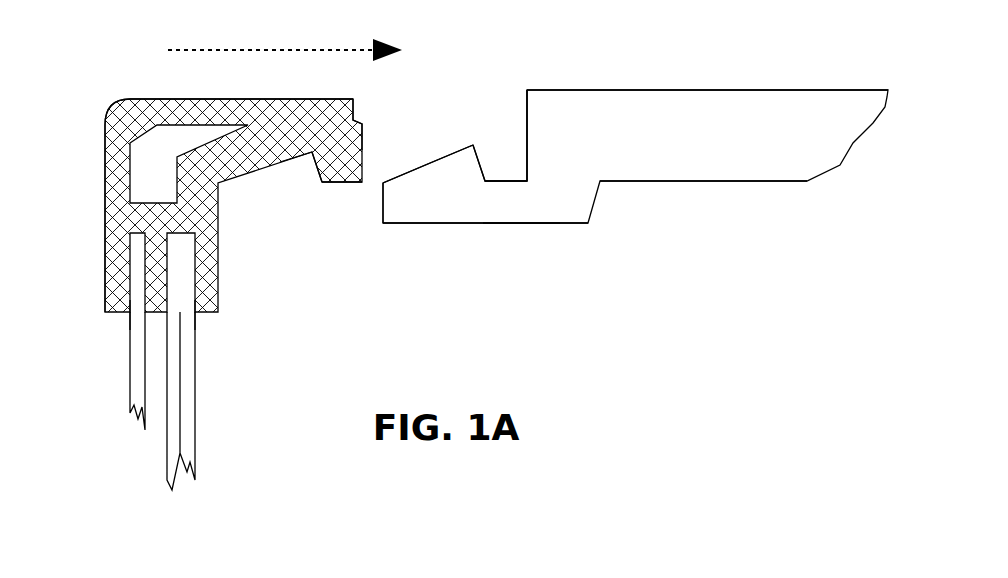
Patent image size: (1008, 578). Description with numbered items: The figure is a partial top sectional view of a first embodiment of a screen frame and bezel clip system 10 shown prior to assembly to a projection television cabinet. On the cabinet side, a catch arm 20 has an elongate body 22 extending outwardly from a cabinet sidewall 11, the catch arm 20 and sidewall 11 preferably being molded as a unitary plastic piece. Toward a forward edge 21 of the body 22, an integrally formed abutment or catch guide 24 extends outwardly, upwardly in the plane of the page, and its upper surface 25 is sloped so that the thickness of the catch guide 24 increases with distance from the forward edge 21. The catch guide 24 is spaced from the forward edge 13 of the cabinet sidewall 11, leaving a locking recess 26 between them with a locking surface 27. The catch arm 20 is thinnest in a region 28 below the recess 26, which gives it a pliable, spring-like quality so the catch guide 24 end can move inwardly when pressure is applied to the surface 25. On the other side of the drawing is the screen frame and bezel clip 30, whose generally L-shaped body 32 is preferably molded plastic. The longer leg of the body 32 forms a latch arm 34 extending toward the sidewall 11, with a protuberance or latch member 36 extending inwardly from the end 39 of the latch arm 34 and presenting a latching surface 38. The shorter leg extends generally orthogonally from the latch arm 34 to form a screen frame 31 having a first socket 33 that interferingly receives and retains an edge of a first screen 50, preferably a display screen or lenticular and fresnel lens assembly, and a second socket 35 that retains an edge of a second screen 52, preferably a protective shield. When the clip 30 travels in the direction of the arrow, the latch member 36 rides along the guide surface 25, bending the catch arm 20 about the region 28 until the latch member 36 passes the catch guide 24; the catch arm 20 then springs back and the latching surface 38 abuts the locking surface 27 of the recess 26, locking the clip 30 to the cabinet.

The screen frame and bezel clip system 10 is at (407, 353).
The cabinet sidewall 11 is at (733, 97).
The forward edge of the cabinet sidewall 13 is at (526, 108).
The catch arm 20 is at (498, 234).
The forward edge 21 is at (383, 214).
The body 22 is at (533, 216).
The catch guide 24 is at (440, 175).
The upper surface 25 is at (407, 170).
The locking recess 26 is at (502, 138).
The locking surface 27 is at (483, 164).
The region 28 is at (495, 206).
The screen frame and bezel clip 30 is at (196, 226).
The screen frame 31 is at (105, 217).
The L-shaped body 32 is at (167, 99).
The first recess or socket 33 is at (194, 297).
The latch arm 34 is at (260, 99).
The second recess or socket 35 is at (132, 298).
The latch member 36 is at (332, 183).
The latching surface 38 is at (317, 165).
The end of the latch arm 39 is at (364, 126).
The first screen 50 is at (199, 351).
The second screen 52 is at (150, 391).